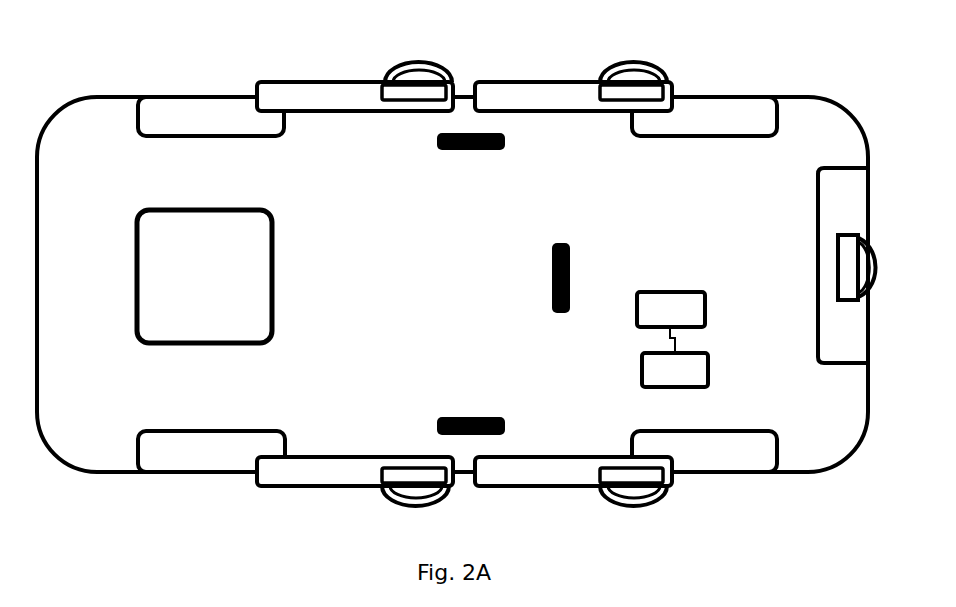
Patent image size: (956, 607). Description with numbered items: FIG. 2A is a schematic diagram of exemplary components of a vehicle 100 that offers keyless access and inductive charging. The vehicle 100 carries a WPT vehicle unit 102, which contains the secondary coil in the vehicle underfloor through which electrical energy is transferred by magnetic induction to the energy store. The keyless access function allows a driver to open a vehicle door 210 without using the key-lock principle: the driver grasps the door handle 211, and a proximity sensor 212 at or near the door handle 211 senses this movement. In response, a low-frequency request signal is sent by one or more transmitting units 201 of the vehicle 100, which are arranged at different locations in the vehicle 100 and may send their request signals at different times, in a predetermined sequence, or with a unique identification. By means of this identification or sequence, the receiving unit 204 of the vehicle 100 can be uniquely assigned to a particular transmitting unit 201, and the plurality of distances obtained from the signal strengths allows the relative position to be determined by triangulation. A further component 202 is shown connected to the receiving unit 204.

The vehicle 100 is at (157, 38).
The WPT vehicle unit 102 is at (150, 249).
The transmitting unit 201 is at (505, 141).
The control unit 202 is at (697, 305).
The receiving unit 204 is at (697, 367).
The vehicle door 210 is at (318, 98).
The door handle 211 is at (421, 70).
The proximity sensor 212 is at (392, 90).